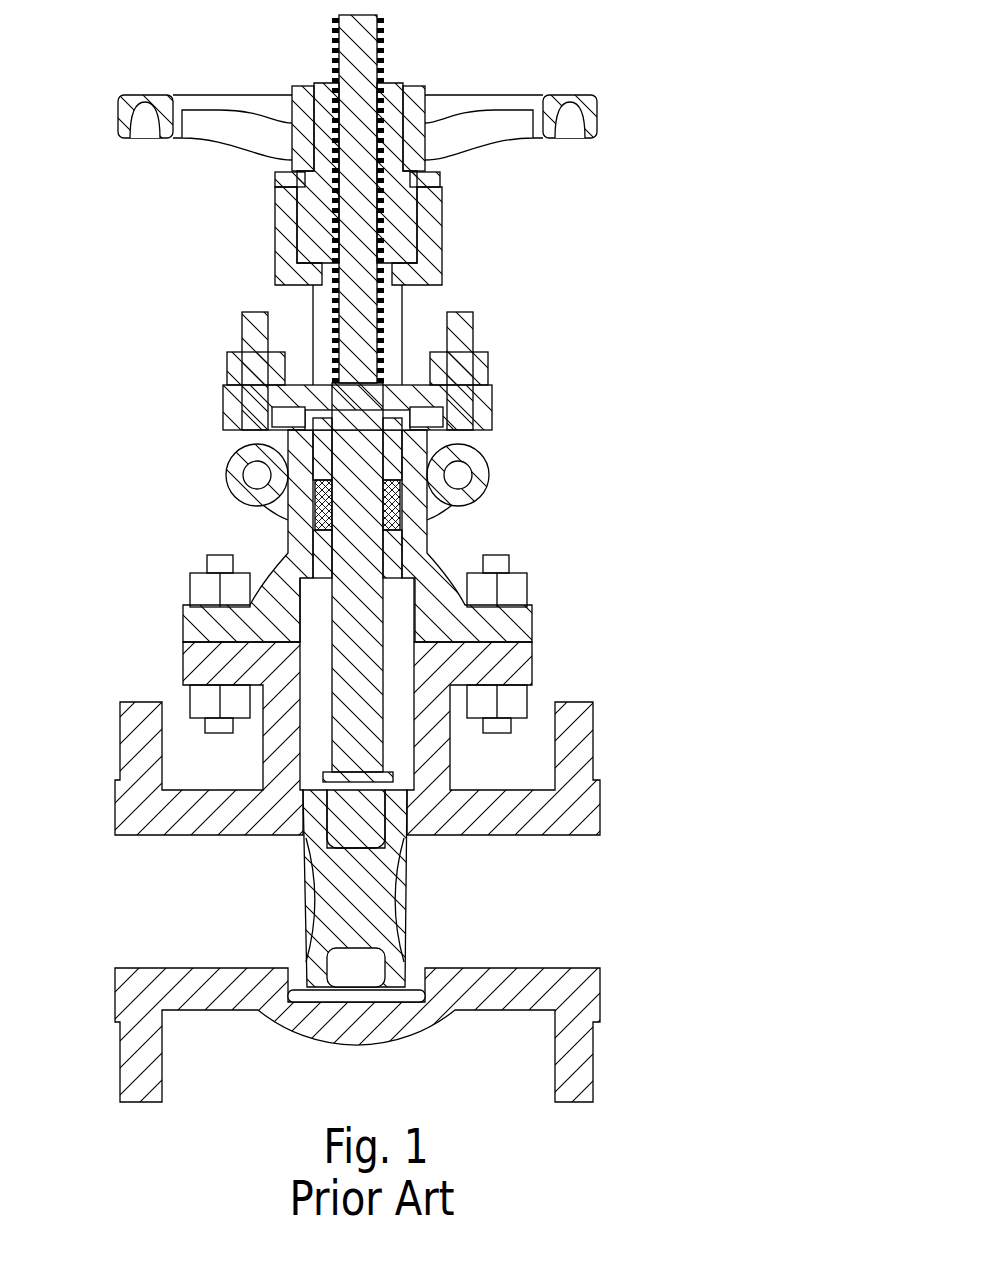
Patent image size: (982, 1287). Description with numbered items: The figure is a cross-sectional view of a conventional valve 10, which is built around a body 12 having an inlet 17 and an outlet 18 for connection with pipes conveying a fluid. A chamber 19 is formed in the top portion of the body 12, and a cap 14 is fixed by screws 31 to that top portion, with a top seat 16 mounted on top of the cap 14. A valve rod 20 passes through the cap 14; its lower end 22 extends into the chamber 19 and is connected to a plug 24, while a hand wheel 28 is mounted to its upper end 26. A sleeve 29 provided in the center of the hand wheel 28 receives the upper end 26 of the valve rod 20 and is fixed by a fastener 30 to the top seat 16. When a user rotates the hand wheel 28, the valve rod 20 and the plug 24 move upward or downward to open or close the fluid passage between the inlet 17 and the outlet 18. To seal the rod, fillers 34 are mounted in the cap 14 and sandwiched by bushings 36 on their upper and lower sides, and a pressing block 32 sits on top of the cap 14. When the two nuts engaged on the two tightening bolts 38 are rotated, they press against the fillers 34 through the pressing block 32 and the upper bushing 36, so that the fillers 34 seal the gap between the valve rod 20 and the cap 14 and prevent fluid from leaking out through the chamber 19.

The conventional valve 10 is at (640, 428).
The body 12 is at (585, 745).
The cap 14 is at (300, 460).
The top seat 16 is at (428, 277).
The inlet 17 is at (125, 898).
The outlet 18 is at (593, 882).
The chamber 19 is at (400, 670).
The valve rod 20 is at (368, 517).
The lower end 22 is at (353, 727).
The plug 24 is at (382, 933).
The upper end 26 is at (365, 53).
The hand wheel 28 is at (595, 103).
The sleeve 29 is at (398, 123).
The fastener 30 is at (287, 180).
The screws 31 is at (513, 587).
The pressing block 32 is at (490, 417).
The fillers 34 is at (397, 497).
The bushings 36 is at (393, 462).
The tightening bolts 38 is at (467, 333).